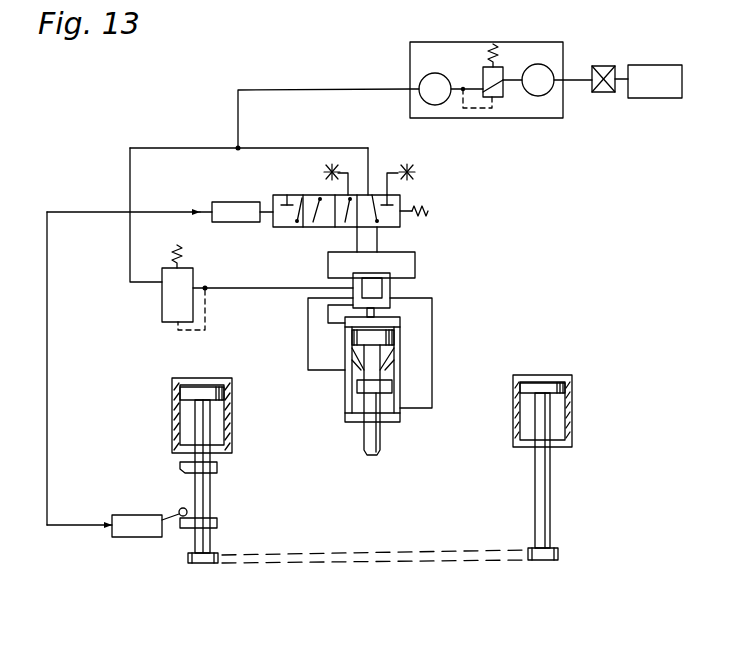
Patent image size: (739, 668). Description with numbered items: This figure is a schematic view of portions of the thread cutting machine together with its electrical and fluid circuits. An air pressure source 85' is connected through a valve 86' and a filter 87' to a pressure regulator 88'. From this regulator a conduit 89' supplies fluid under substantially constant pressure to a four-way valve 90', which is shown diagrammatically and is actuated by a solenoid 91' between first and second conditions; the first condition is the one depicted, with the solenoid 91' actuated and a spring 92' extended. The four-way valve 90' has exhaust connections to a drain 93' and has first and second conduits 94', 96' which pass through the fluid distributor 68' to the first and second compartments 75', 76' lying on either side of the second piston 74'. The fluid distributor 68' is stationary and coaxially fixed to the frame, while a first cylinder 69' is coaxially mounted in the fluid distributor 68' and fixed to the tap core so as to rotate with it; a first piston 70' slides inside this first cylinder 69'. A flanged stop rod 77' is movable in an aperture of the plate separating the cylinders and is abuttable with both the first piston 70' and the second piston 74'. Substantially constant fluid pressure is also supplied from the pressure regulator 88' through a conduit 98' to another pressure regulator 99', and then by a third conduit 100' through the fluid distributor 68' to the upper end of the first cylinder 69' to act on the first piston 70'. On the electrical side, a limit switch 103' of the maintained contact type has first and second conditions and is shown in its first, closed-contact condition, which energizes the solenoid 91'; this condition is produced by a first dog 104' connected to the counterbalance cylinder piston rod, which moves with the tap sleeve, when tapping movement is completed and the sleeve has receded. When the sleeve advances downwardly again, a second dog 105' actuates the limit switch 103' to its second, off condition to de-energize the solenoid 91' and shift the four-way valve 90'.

The air pressure source 85' is at (666, 63).
The valve 86' is at (606, 105).
The filter 87' is at (501, 64).
The pressure regulator 88' is at (513, 123).
The conduit 89' is at (336, 181).
The four-way valve 90' is at (403, 163).
The solenoid 91' is at (236, 197).
The spring 92' is at (438, 202).
The drain 93' is at (374, 168).
The first conduit 94' is at (401, 265).
The second conduit 96' is at (301, 262).
The conduit 98' is at (273, 185).
The pressure regulator 99' is at (156, 287).
The third conduit 100' is at (273, 306).
The fluid distributor 68' is at (421, 295).
The first cylinder 69' is at (370, 353).
The first piston 70' is at (415, 369).
The second piston 74' is at (424, 416).
The first compartment 75' is at (399, 406).
The second compartment 76' is at (346, 375).
The flanged stop rod 77' is at (419, 381).
The limit switch 103' is at (138, 510).
The first dog 104' is at (236, 525).
The second dog 105' is at (236, 469).